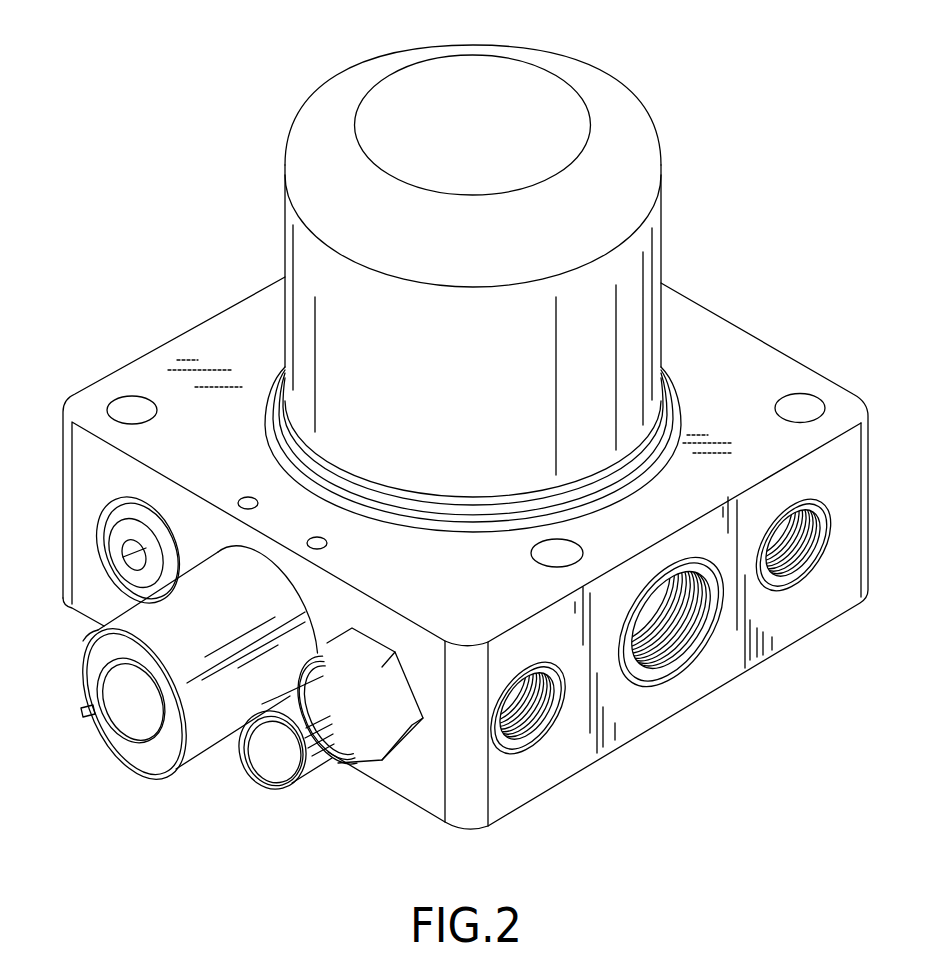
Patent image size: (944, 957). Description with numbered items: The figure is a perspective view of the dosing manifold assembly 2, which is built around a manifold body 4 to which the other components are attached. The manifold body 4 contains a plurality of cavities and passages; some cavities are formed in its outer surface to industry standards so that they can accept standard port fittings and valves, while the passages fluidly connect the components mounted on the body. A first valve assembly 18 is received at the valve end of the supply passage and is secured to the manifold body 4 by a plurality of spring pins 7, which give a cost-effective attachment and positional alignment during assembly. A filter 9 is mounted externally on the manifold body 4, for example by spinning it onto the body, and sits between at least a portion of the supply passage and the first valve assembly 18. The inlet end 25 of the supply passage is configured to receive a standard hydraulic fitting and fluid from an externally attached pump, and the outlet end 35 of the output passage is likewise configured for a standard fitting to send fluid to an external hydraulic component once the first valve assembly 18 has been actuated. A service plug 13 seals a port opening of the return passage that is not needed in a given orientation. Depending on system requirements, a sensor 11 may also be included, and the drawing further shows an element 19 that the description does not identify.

The dosing manifold assembly 2 is at (795, 120).
The manifold body 4 is at (812, 374).
The spring pins 7 is at (248, 496).
The filter 9 is at (624, 99).
The sensor 11 is at (268, 786).
The service plug 13 is at (108, 541).
The first valve assembly 18 is at (130, 773).
The port 19 is at (797, 586).
The inlet end 25 is at (698, 666).
The outlet end 35 is at (538, 746).